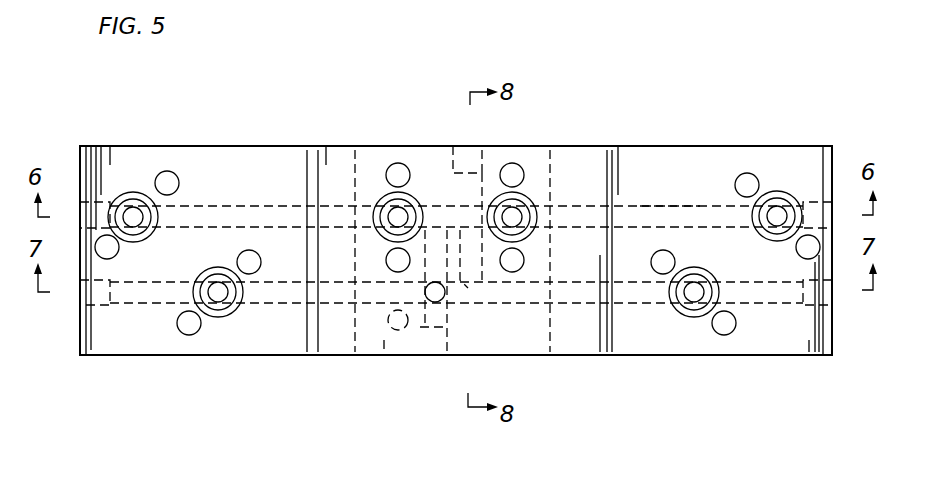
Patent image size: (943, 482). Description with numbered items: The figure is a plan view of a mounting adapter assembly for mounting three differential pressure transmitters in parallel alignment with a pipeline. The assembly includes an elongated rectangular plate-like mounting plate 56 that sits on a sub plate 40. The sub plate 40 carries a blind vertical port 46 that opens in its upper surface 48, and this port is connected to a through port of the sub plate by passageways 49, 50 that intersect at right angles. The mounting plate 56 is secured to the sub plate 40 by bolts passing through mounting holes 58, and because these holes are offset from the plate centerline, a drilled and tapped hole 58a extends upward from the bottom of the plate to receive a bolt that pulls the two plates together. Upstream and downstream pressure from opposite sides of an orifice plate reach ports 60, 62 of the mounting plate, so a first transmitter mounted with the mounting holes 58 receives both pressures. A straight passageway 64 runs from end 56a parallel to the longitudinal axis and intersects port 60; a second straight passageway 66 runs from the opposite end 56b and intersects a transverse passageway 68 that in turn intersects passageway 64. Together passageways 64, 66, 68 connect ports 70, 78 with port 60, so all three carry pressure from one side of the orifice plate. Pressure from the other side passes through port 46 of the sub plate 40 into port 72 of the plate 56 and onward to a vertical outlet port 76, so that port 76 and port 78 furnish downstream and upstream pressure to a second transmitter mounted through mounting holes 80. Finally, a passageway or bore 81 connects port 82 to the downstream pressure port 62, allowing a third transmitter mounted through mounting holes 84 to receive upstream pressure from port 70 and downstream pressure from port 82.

The sub plate 40 is at (540, 318).
The vertical port 46 is at (450, 328).
The upper surface 48 is at (385, 350).
The passageway 49 is at (483, 200).
The passageway 50 is at (437, 248).
The mounting plate 56 is at (731, 143).
The end of plate 56a is at (80, 330).
The end of plate 56b is at (832, 330).
The mounting holes 58 is at (398, 163).
The drilled and tapped hole 58a is at (390, 322).
The port 60 is at (392, 212).
The port 62 is at (535, 203).
The straight passageway 64 is at (235, 215).
The second straight passageway 66 is at (648, 292).
The transverse passageway 68 is at (458, 190).
The port 70 is at (694, 302).
The port 72 is at (444, 298).
The vertical outlet port 76 is at (218, 300).
The port 78 is at (133, 208).
The mounting holes 80 is at (170, 172).
The passageway or bore 81 is at (660, 205).
The port 82 is at (780, 212).
The mounting holes 84 is at (752, 177).